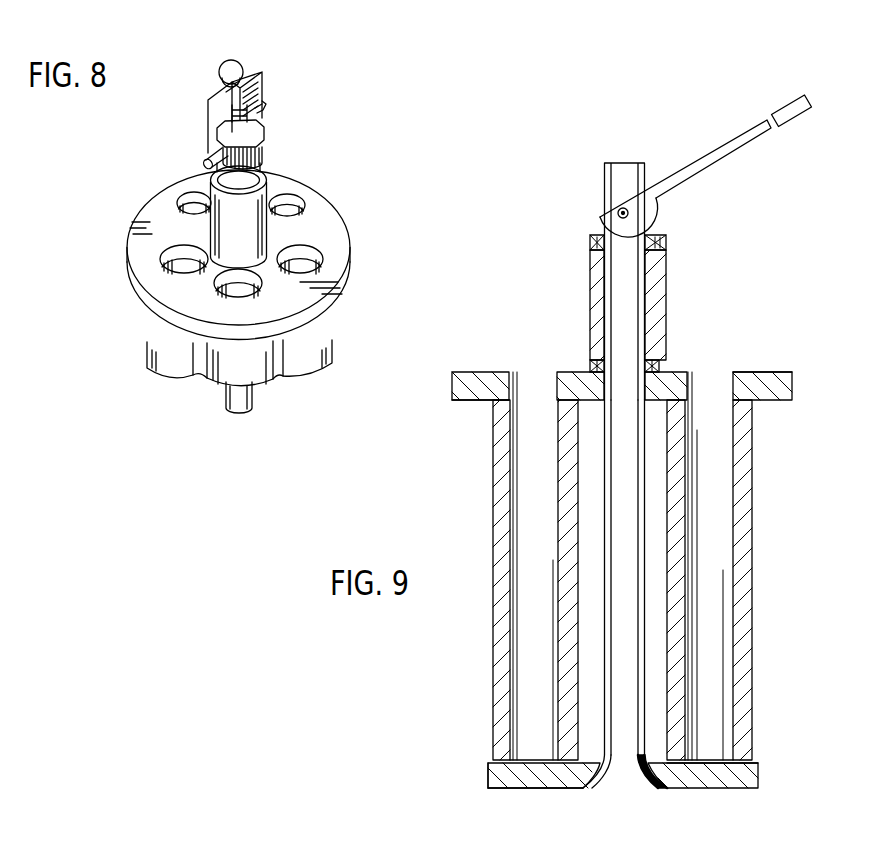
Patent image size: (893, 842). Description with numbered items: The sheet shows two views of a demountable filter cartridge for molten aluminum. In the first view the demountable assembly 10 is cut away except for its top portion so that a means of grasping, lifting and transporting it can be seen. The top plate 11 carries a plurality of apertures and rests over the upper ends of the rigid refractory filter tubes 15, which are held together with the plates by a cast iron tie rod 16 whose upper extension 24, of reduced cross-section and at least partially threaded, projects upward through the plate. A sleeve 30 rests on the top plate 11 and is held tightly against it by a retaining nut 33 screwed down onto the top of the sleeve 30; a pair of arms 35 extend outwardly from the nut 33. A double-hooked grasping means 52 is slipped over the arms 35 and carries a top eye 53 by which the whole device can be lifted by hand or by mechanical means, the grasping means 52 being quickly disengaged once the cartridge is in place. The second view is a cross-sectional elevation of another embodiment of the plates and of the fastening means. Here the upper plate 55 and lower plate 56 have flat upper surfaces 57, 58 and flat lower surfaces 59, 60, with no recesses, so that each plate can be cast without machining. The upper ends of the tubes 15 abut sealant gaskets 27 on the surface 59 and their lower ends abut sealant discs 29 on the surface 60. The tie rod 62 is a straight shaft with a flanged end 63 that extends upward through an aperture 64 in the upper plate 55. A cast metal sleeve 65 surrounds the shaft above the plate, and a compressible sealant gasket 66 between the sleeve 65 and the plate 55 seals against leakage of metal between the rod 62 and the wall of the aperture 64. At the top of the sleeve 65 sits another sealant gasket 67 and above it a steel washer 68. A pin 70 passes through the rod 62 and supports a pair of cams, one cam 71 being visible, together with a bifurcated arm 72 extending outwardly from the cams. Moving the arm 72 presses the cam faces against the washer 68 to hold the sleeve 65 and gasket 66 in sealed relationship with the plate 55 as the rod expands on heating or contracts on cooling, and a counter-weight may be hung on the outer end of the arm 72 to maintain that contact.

In FIG. 8, the demountable assembly 10 is at (116, 298).
In FIG. 8, the top plate 11 is at (338, 250).
In FIG. 8, the filter tubes 15 is at (322, 331).
In FIG. 9, the filter tubes 15 is at (752, 458).
In FIG. 8, the tie rod 16 is at (247, 392).
In FIG. 8, the extension 24 is at (290, 90).
In FIG. 9, the gasket 27 is at (494, 412).
In FIG. 9, the sealant disc 29 is at (492, 760).
In FIG. 8, the sleeve 30 is at (268, 172).
In FIG. 8, the retaining nut 33 is at (263, 142).
In FIG. 8, the arms 35 is at (207, 158).
In FIG. 8, the double-hooked grasping means 52 is at (218, 110).
In FIG. 8, the top eye 53 is at (238, 58).
In FIG. 9, the upper plate 55 is at (793, 386).
In FIG. 9, the lower plate 56 is at (759, 780).
In FIG. 9, the flat upper surface 57 is at (756, 372).
In FIG. 9, the flat upper surface 58 is at (757, 762).
In FIG. 9, the flat lower surface 59 is at (463, 402).
In FIG. 9, the flat lower surface 60 is at (553, 790).
In FIG. 9, the tie rod 62 is at (620, 532).
In FIG. 9, the flanged end 63 is at (617, 786).
In FIG. 9, the aperture 64 is at (650, 360).
In FIG. 9, the metal sleeve 65 is at (657, 301).
In FIG. 9, the compressible sealant gasket 66 is at (590, 363).
In FIG. 9, the sealant gasket 67 is at (661, 243).
In FIG. 9, the washer 68 is at (656, 238).
In FIG. 9, the pin 70 is at (609, 182).
In FIG. 9, the cam 71 is at (614, 214).
In FIG. 9, the bifurcated arm 72 is at (740, 138).